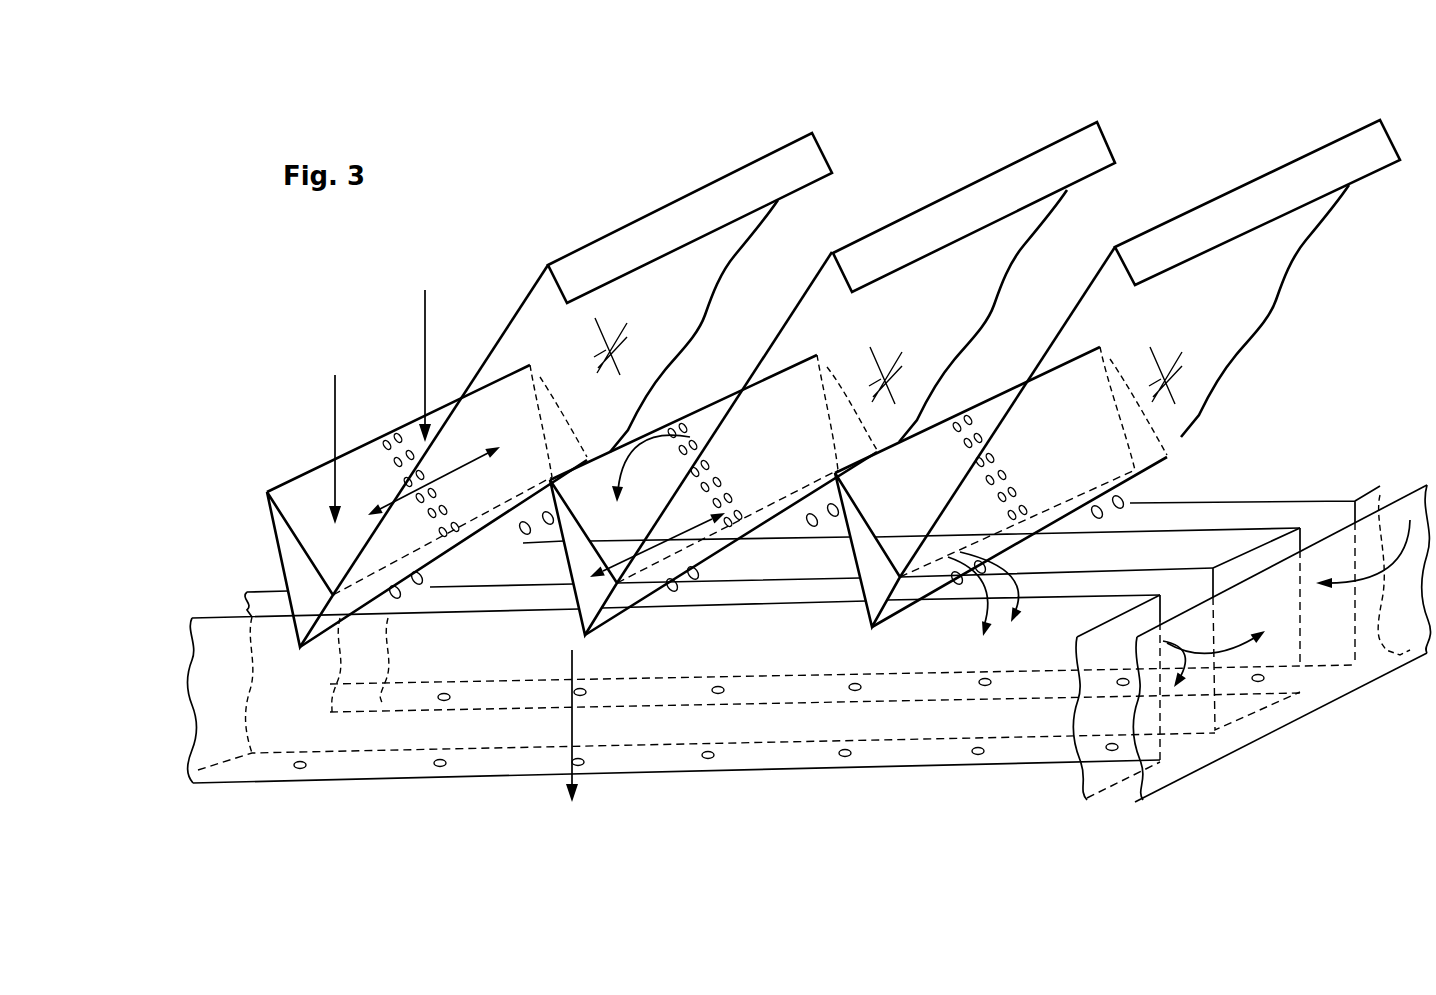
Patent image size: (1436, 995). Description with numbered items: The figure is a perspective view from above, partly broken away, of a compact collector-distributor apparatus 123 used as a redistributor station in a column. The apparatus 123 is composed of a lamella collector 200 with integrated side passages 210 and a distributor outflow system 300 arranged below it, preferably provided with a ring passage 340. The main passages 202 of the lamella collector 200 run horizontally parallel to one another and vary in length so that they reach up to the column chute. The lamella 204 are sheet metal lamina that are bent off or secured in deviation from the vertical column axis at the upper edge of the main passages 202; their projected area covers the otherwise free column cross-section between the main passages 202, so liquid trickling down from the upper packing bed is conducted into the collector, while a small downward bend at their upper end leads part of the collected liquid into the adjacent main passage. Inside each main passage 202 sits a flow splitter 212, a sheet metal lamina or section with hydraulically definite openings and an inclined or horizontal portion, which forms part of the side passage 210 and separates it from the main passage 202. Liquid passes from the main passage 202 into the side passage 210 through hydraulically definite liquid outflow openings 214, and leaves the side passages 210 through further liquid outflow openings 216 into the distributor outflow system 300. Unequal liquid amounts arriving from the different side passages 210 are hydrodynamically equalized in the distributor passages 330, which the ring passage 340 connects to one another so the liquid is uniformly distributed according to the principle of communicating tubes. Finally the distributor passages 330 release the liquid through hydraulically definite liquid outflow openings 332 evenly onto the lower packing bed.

The collector-distributor apparatus 123 is at (501, 202).
The lamella collector 200 is at (1227, 145).
The main passage 202 is at (903, 523).
The lamella 204 is at (685, 306).
The side passage 210 is at (875, 585).
The flow splitter 212 is at (332, 511).
The liquid outflow openings 214 is at (397, 462).
The liquid outflow openings 216 is at (1140, 498).
The distributor outflow system 300 is at (653, 769).
The distributor passages 330 is at (1280, 508).
The liquid outflow openings 332 is at (307, 768).
The ring passage 340 is at (1160, 773).